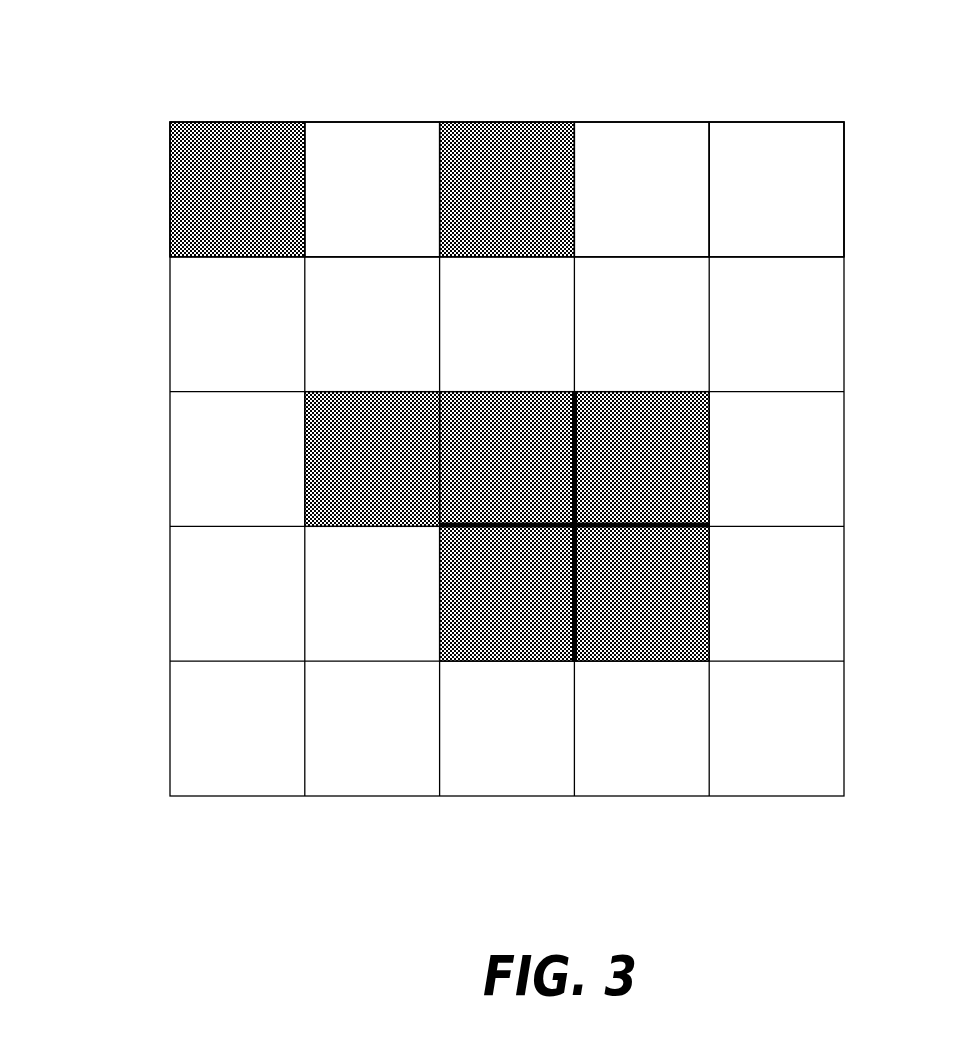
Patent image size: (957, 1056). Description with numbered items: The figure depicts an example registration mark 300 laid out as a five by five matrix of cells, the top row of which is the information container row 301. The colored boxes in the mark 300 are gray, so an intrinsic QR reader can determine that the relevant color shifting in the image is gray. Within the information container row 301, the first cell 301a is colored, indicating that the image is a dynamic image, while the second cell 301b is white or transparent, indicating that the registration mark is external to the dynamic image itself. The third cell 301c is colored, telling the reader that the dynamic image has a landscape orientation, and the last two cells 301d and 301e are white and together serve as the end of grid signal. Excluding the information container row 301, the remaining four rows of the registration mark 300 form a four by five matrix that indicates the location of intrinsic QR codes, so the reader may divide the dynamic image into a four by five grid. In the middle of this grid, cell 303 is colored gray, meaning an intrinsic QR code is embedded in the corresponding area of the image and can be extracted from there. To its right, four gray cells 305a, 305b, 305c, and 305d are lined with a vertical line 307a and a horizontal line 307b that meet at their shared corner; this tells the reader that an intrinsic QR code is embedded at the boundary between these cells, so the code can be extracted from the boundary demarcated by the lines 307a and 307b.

The registration mark 300 is at (577, 98).
The information container row 301 is at (147, 208).
The cell 301a is at (237, 189).
The cell 301b is at (372, 189).
The cell 301c is at (507, 189).
The cell 301d is at (641, 189).
The cell 301e is at (776, 189).
The cell 303 is at (372, 459).
The cell 305a is at (507, 459).
The cell 305b is at (641, 459).
The cell 305c is at (507, 593).
The cell 305d is at (641, 593).
The line 307a is at (573, 413).
The line 307b is at (456, 527).